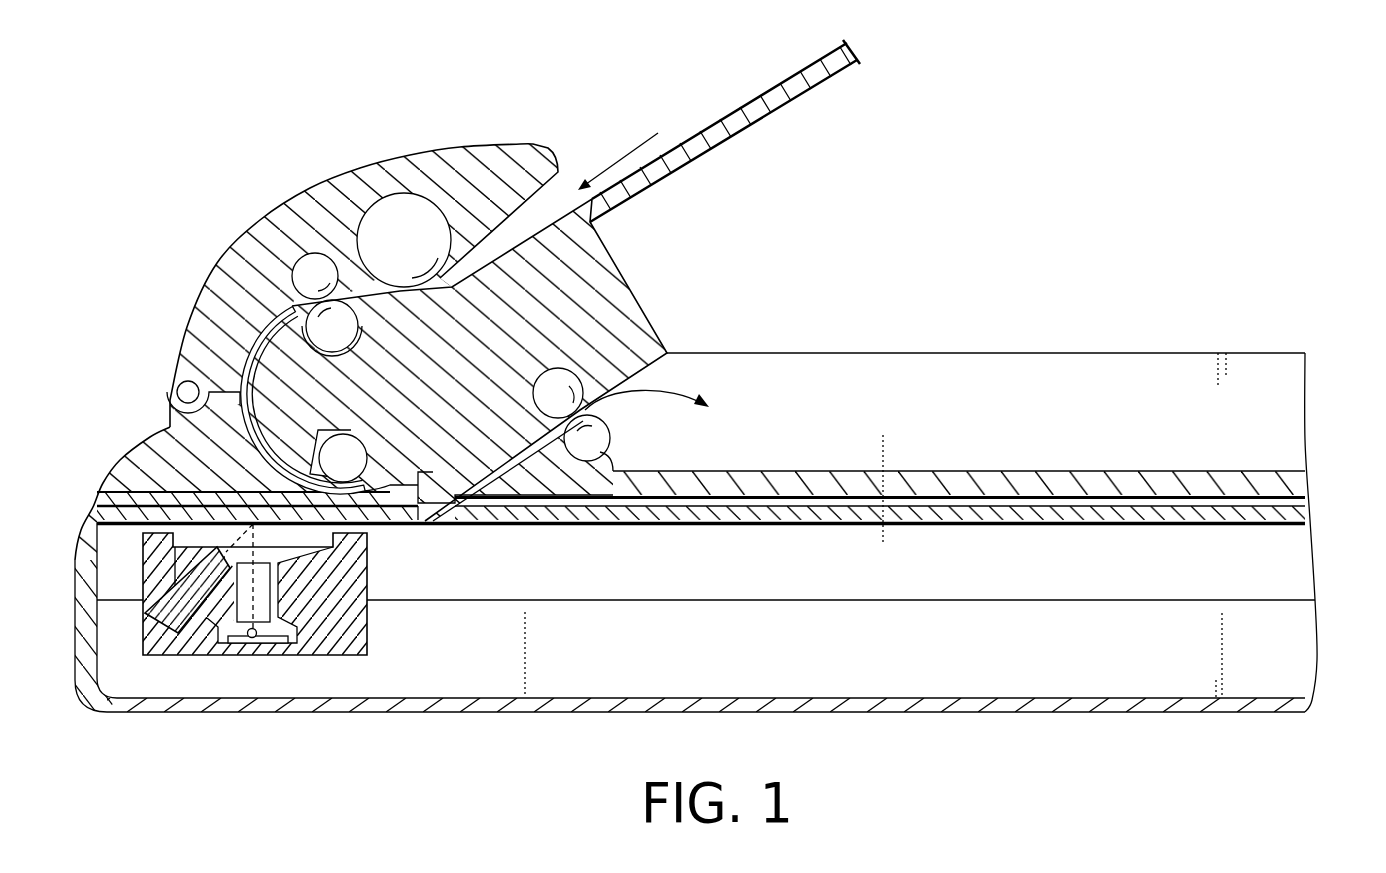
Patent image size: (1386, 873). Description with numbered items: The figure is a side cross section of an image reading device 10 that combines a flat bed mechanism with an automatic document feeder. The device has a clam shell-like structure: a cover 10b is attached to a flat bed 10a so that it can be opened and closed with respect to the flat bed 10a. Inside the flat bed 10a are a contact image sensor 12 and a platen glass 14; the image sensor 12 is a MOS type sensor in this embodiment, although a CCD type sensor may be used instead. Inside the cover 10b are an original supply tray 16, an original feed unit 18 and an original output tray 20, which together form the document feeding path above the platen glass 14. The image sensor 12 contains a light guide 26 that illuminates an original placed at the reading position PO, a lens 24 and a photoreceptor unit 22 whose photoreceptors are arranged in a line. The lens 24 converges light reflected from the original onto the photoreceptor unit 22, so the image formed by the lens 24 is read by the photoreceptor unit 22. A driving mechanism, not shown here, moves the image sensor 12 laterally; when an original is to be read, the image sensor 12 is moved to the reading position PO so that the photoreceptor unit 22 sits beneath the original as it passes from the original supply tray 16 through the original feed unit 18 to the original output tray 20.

The image reading device 10 is at (729, 436).
The flat bed 10a is at (1288, 635).
The cover 10b is at (1277, 417).
The contact image sensor 12 is at (209, 652).
The platen glass 14 is at (413, 527).
The original supply tray 16 is at (712, 137).
The original feed unit 18 is at (255, 262).
The original output tray 20 is at (930, 470).
The photoreceptor unit 22 is at (257, 637).
The lens 24 is at (263, 592).
The light guide 26 is at (173, 615).
The reading position PO is at (392, 532).